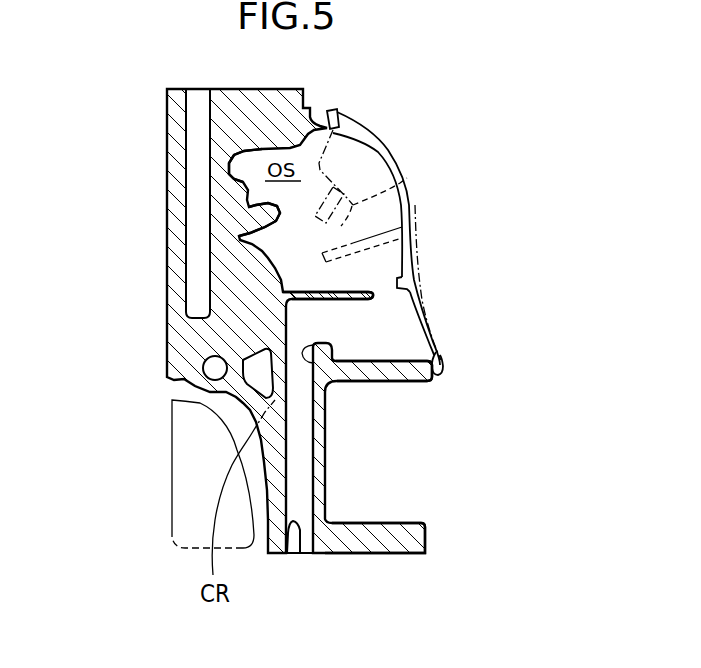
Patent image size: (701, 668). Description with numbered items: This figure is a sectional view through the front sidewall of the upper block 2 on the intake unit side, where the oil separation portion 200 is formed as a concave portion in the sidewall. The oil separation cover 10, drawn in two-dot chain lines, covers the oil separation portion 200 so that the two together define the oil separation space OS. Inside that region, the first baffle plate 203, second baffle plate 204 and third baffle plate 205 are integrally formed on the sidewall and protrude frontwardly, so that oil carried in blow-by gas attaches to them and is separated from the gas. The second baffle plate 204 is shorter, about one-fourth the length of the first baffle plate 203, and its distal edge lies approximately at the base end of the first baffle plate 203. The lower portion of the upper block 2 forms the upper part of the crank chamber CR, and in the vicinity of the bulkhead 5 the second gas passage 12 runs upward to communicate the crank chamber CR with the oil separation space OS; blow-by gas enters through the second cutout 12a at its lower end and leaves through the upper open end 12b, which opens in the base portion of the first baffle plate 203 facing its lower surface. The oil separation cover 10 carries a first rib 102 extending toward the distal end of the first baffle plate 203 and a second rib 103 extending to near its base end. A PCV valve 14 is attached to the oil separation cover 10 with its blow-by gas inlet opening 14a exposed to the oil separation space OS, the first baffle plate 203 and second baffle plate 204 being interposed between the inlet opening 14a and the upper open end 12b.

The upper block 2 is at (135, 126).
The bulkhead 5 is at (172, 462).
The oil separation cover 10 is at (444, 350).
The second gas passage 12 is at (302, 452).
The second cutout 12a is at (287, 554).
The upper open end of the second gas passage 12b is at (357, 384).
The PCV valve 14 is at (282, 195).
The blow-by gas inlet opening 14a is at (319, 228).
The first rib 102 is at (408, 286).
The second rib 103 is at (380, 244).
The oil separation portion 200 is at (305, 181).
The first baffle plate 203 is at (332, 298).
The second baffle plate 204 is at (258, 216).
The third baffle plate 205 is at (247, 178).